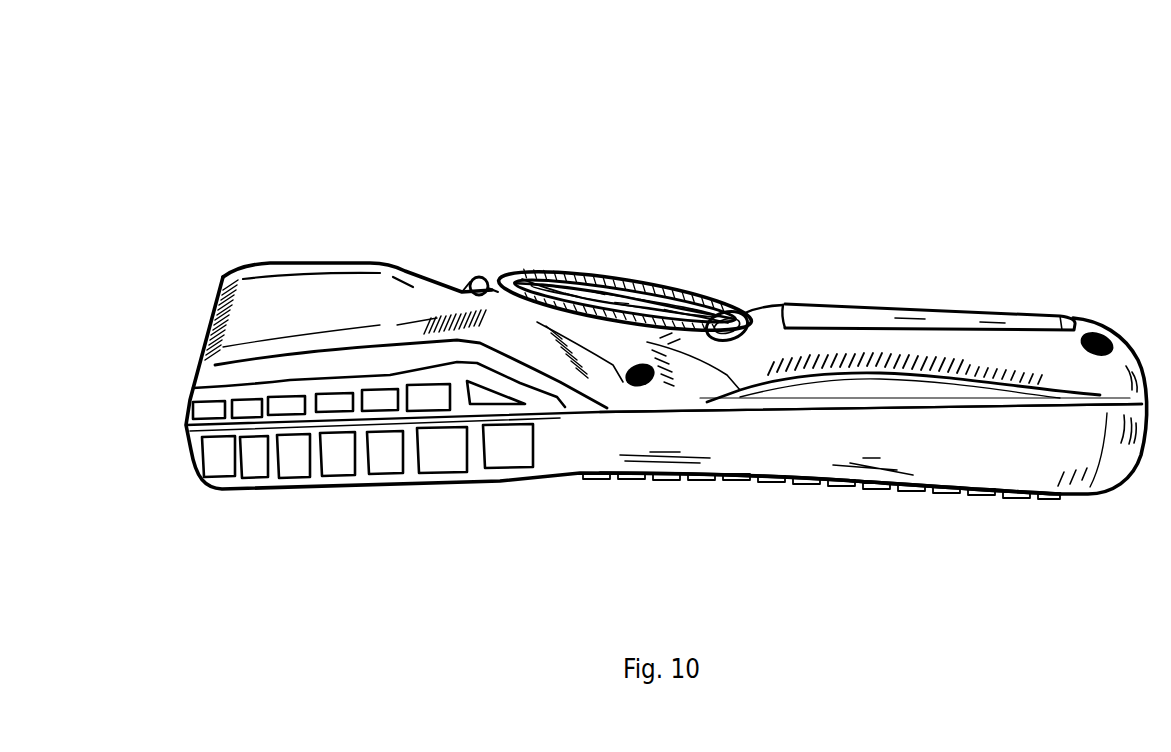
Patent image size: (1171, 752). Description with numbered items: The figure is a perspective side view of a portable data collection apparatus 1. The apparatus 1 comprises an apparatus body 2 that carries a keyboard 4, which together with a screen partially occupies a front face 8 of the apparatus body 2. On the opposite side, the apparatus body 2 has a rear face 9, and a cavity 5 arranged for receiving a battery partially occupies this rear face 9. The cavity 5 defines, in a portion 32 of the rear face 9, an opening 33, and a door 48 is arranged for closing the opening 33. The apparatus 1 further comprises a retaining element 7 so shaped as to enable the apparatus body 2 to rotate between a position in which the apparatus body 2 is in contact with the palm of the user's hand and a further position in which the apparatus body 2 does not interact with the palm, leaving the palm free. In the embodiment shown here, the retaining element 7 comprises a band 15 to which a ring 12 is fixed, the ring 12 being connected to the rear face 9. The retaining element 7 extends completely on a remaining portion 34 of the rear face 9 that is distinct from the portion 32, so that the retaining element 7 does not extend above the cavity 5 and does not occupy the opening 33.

The portable data collection apparatus 1 is at (281, 142).
The apparatus body 2 is at (997, 460).
The keyboard 4 is at (790, 480).
The cavity 5 is at (958, 270).
The retaining element 7 is at (658, 236).
The front face 8 is at (551, 478).
The rear face 9 is at (772, 303).
The ring 12 is at (629, 284).
The band 15 is at (546, 278).
The portion 32 is at (1045, 240).
The opening 33 is at (920, 330).
The remaining portion 34 is at (496, 238).
The door 48 is at (1035, 323).